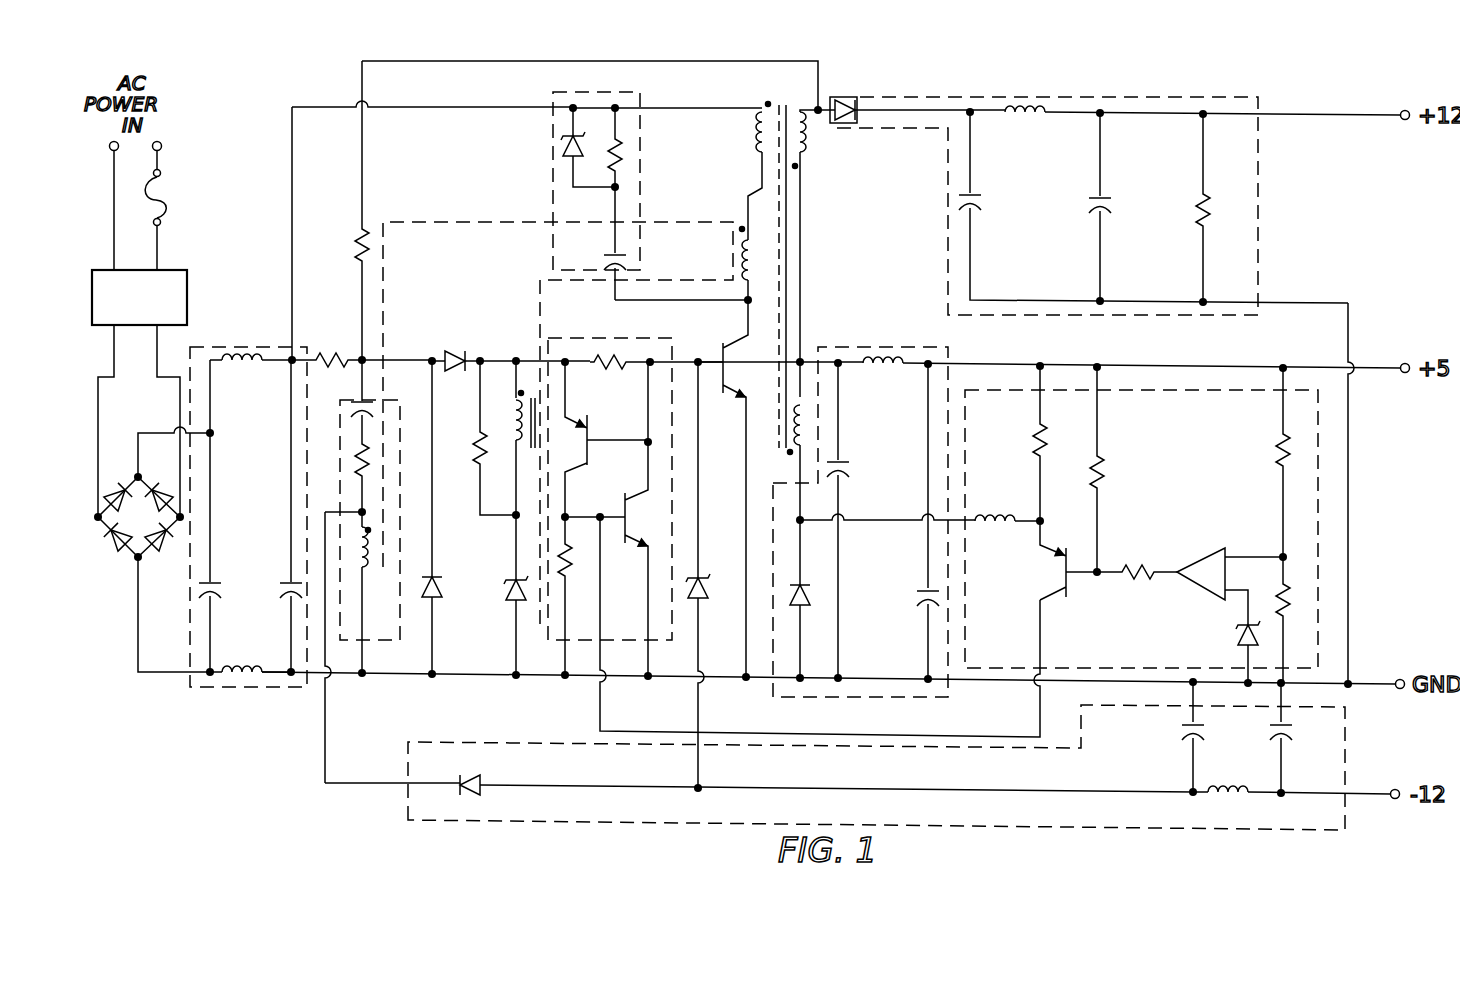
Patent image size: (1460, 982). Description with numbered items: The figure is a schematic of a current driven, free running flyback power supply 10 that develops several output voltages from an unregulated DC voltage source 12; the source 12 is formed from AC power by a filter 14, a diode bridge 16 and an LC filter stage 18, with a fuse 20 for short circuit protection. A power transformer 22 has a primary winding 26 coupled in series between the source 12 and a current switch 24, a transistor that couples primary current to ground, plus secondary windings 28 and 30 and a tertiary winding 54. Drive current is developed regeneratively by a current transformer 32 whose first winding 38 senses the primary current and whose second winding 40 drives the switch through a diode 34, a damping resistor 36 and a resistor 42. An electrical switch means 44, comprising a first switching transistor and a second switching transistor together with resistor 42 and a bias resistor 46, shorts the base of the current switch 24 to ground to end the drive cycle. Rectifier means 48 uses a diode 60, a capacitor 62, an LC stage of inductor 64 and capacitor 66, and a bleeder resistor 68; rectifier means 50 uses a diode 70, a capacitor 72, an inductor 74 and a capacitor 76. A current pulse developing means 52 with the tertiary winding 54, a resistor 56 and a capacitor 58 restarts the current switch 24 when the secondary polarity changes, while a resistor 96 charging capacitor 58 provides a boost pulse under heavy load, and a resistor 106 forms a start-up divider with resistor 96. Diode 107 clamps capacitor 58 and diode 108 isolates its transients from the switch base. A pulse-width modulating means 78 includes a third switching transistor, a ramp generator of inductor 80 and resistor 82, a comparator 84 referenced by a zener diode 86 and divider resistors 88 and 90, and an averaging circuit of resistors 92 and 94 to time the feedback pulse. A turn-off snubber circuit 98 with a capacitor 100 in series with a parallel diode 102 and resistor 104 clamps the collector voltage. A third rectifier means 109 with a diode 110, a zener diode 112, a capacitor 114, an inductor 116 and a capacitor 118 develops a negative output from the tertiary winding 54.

The power supply 10 is at (400, 47).
The unregulated DC voltage source 12 is at (243, 122).
The filter 14 is at (182, 286).
The diode bridge 16 is at (120, 558).
The LC filter stage 18 is at (257, 343).
The fuse 20 is at (159, 194).
The power transformer 22 is at (792, 294).
The current switch 24 is at (726, 344).
The primary winding 26 is at (756, 150).
The secondary winding 28 is at (803, 150).
The secondary winding 30 is at (809, 434).
The current transformer 32 is at (537, 290).
The diode 34 is at (509, 601).
The damping resistor 36 is at (479, 428).
The first winding 38 is at (744, 232).
The second winding 40 is at (522, 440).
The resistor 42 is at (610, 374).
The electrical switch means 44 is at (610, 492).
The resistor 46 is at (562, 579).
The rectifier means 48 is at (1109, 192).
The rectifier means 50 is at (850, 502).
The current pulse developing means 52 is at (351, 516).
The tertiary winding 54 is at (376, 574).
The resistor 56 is at (348, 453).
The capacitor 58 is at (347, 404).
The diode 60 is at (841, 96).
The capacitor 62 is at (976, 198).
The inductor 64 is at (1046, 106).
The capacitor 66 is at (1086, 212).
The bleeder resistor 68 is at (1206, 215).
The diode 70 is at (795, 590).
The capacitor 72 is at (849, 468).
The inductor 74 is at (896, 356).
The capacitor 76 is at (918, 600).
The pulse-width modulating means 78 is at (1141, 524).
The inductor 80 is at (1019, 510).
The resistor 82 is at (1046, 442).
The comparator 84 is at (1214, 552).
The zener diode 86 is at (1236, 637).
The resistor 88 is at (1274, 441).
The resistor 90 is at (1274, 592).
The resistor 92 is at (1100, 452).
The resistor 94 is at (1130, 580).
The resistor 96 is at (361, 234).
The turn-off snubber circuit 98 is at (640, 187).
The capacitor 100 is at (619, 252).
The diode 102 is at (563, 148).
The resistor 104 is at (618, 150).
The resistor 106 is at (355, 352).
The diode 107 is at (439, 590).
The diode 108 is at (447, 354).
The third rectifier means 109 is at (856, 769).
The diode 110 is at (485, 780).
The zener diode 112 is at (715, 580).
The capacitor 114 is at (1179, 736).
The inductor 116 is at (1216, 798).
The capacitor 118 is at (1288, 730).